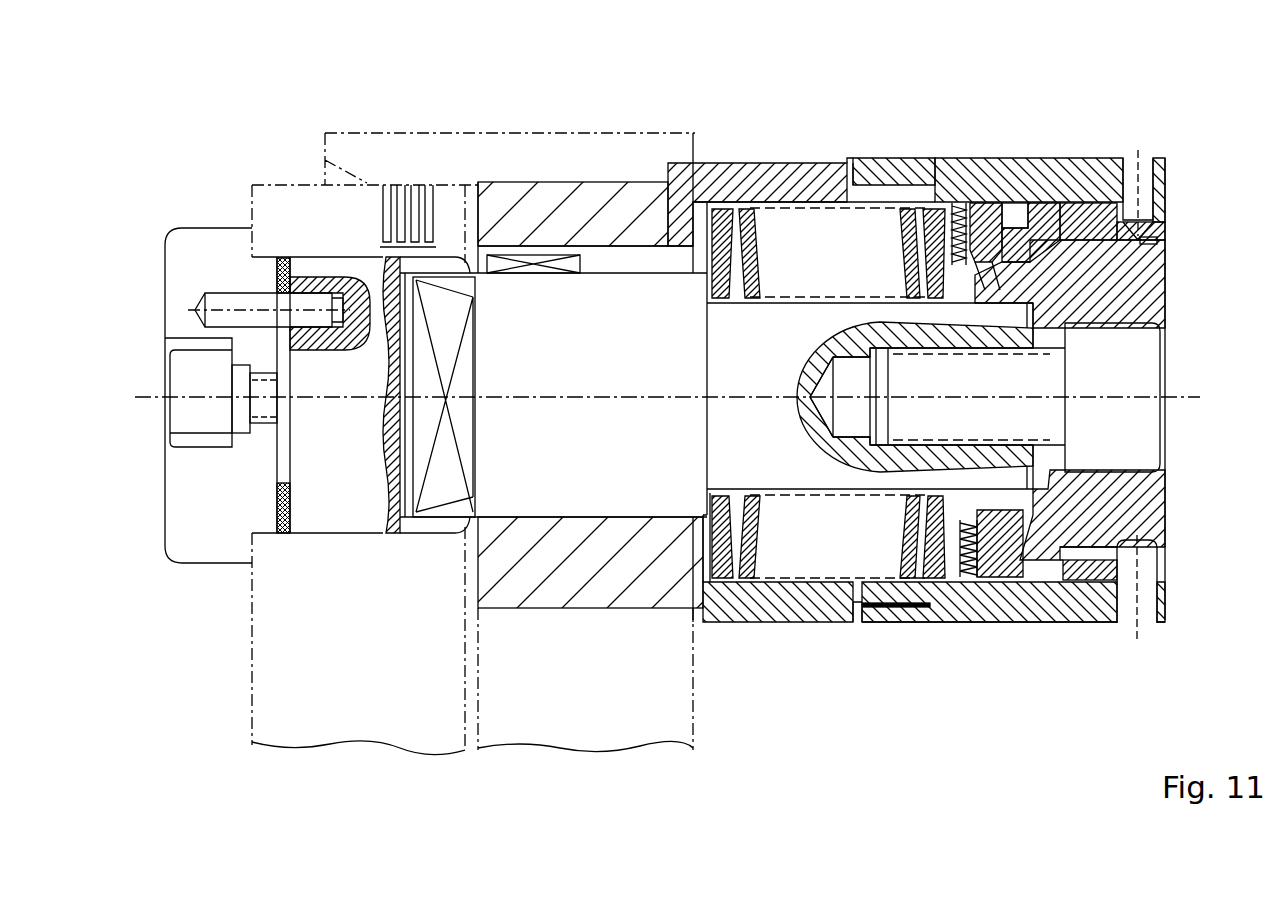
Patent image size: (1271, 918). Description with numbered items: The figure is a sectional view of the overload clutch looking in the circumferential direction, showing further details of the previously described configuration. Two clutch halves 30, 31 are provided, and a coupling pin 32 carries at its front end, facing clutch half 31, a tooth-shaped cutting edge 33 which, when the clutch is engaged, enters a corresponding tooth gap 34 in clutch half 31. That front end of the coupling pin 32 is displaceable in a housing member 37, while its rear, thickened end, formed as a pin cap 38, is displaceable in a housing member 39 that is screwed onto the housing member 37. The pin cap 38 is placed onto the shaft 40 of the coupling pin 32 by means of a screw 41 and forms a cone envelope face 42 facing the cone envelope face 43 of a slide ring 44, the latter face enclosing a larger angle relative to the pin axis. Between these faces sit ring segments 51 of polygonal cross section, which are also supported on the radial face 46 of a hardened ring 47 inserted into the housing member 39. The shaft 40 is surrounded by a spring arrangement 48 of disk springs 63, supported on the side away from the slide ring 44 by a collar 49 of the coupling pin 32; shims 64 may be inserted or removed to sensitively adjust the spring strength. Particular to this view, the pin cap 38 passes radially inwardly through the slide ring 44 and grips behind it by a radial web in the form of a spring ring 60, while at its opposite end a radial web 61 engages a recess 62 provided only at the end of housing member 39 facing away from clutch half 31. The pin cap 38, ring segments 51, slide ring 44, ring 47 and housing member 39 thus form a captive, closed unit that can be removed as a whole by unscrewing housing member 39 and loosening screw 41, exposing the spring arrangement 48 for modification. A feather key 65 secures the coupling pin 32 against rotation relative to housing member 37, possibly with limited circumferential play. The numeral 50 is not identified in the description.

The clutch half 30 is at (583, 693).
The clutch half 31 is at (283, 660).
The coupling pin 32 is at (643, 300).
The tooth-shaped cutting edge 33 is at (460, 520).
The tooth gap 34 is at (445, 493).
The housing member 37 is at (800, 180).
The pin cap 38 is at (1150, 208).
The housing member 39 is at (1068, 157).
The shaft 40 is at (795, 470).
The screw 41 is at (1127, 440).
The cone envelope face 42 is at (1047, 517).
The cone envelope face 43 is at (1045, 287).
The slide ring 44 is at (993, 195).
The radial face 46 is at (1083, 624).
The hardened ring 47 is at (1130, 158).
The spring arrangement 48 is at (718, 590).
The collar 49 is at (705, 480).
The screw 50 is at (1165, 557).
The ring segments 51 is at (1030, 200).
The spring ring 60 is at (968, 212).
The radial web 61 is at (1165, 239).
The recess 62 is at (1165, 218).
The disk springs 63 is at (740, 212).
The shims 64 is at (955, 200).
The feather key 65 is at (596, 252).